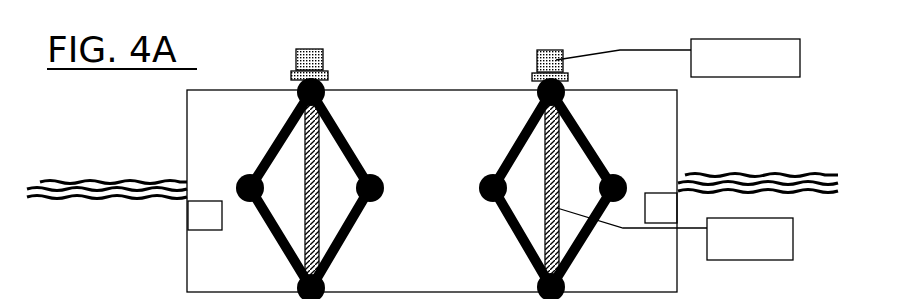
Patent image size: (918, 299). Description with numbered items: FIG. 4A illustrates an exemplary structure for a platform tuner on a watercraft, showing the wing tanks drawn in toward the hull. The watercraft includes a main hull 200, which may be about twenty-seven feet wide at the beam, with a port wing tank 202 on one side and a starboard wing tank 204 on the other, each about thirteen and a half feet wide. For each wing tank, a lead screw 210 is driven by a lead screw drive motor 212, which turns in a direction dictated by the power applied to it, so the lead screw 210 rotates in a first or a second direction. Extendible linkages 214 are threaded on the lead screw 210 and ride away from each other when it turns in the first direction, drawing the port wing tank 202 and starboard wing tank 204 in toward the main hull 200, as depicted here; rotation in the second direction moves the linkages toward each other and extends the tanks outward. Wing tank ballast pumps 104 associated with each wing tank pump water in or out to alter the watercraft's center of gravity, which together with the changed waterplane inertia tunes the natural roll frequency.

The main hull 200 is at (432, 170).
The port wing tank 202 is at (147, 148).
The starboard wing tank 204 is at (715, 145).
The wing tank ballast pump 104 is at (767, 208).
The lead screw 210 is at (549, 185).
The lead screw drive motor 212 is at (517, 43).
The extendible linkages 214 is at (413, 188).